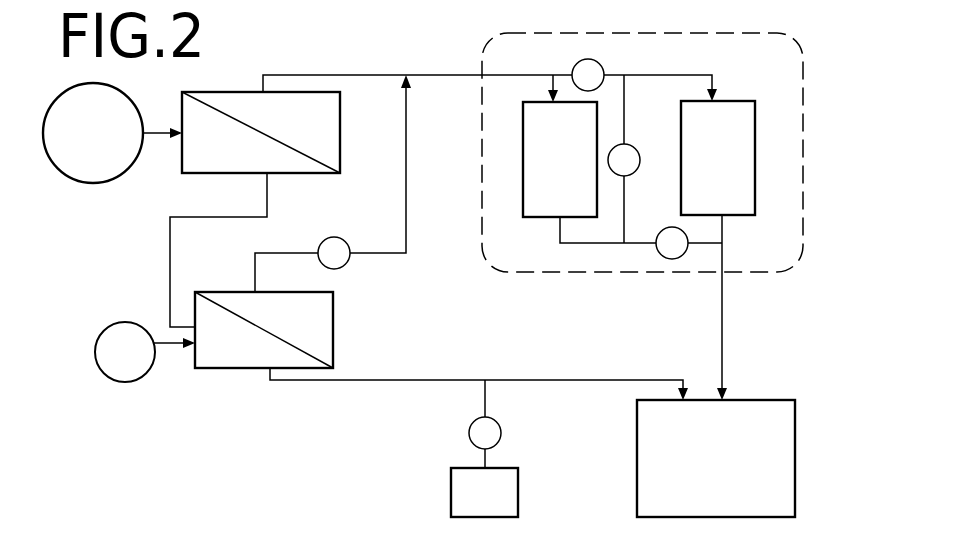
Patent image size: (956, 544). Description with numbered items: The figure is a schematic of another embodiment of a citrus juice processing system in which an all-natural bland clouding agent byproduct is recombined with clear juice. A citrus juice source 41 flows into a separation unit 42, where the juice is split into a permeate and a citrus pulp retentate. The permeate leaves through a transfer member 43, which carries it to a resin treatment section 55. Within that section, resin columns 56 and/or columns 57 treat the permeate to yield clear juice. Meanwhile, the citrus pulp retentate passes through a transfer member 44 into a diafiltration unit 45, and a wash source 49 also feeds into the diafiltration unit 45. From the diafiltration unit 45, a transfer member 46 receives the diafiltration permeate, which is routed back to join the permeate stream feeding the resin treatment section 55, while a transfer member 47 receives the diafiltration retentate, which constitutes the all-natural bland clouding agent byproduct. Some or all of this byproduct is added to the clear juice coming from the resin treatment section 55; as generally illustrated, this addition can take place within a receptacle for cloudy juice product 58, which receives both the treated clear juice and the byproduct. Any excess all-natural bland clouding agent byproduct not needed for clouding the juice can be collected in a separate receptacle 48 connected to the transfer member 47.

The citrus juice source 41 is at (78, 146).
The separation unit 42 is at (340, 122).
The transfer member 43 is at (300, 75).
The transfer member 44 is at (267, 203).
The diafiltration unit 45 is at (333, 320).
The transfer member 46 is at (316, 253).
The transfer member 47 is at (446, 380).
The receptacle 48 is at (469, 505).
The wash source 49 is at (109, 360).
The resin treatment section 55 is at (803, 200).
The resin columns 56 is at (544, 169).
The columns 57 is at (702, 169).
The receptacle for cloudy juice product 58 is at (697, 467).